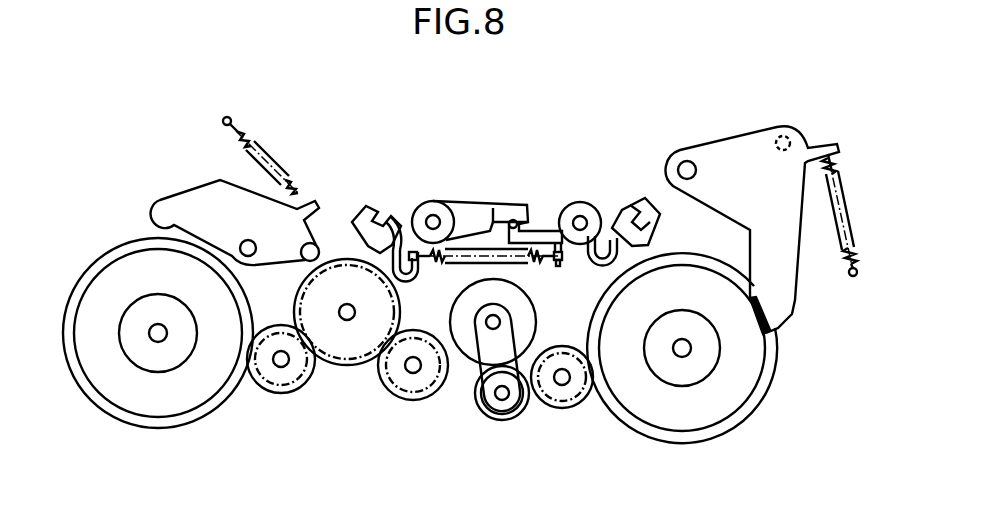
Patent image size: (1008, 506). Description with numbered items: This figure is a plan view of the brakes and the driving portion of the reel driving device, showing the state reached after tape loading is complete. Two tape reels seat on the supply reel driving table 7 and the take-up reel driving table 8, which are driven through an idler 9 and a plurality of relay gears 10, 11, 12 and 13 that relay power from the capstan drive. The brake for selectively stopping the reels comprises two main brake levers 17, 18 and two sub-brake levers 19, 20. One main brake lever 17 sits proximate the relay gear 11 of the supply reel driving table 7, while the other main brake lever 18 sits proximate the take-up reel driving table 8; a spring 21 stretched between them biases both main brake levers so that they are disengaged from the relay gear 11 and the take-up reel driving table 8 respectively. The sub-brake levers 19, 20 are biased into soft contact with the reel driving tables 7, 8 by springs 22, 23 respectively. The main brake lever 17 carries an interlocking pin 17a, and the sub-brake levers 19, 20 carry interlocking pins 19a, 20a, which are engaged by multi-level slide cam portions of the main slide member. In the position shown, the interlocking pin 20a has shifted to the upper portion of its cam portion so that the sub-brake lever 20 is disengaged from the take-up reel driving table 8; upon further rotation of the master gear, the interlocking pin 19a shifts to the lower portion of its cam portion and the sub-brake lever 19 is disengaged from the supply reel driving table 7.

The supply reel driving table 7 is at (163, 428).
The take-up reel driving table 8 is at (688, 438).
The idler 9 is at (502, 421).
The relay gear 10 is at (413, 400).
The relay gear 11 is at (345, 368).
The relay gear 12 is at (272, 396).
The relay gear 13 is at (570, 408).
The main brake lever 17 is at (450, 204).
The interlocking pin 17a is at (522, 222).
The main brake lever 18 is at (545, 236).
The sub-brake lever 19 is at (192, 200).
The interlocking pin 19a is at (321, 244).
The sub-brake lever 20 is at (714, 150).
The interlocking pin 20a is at (787, 140).
The spring 21 is at (500, 249).
The spring 22 is at (295, 182).
The spring 23 is at (858, 240).